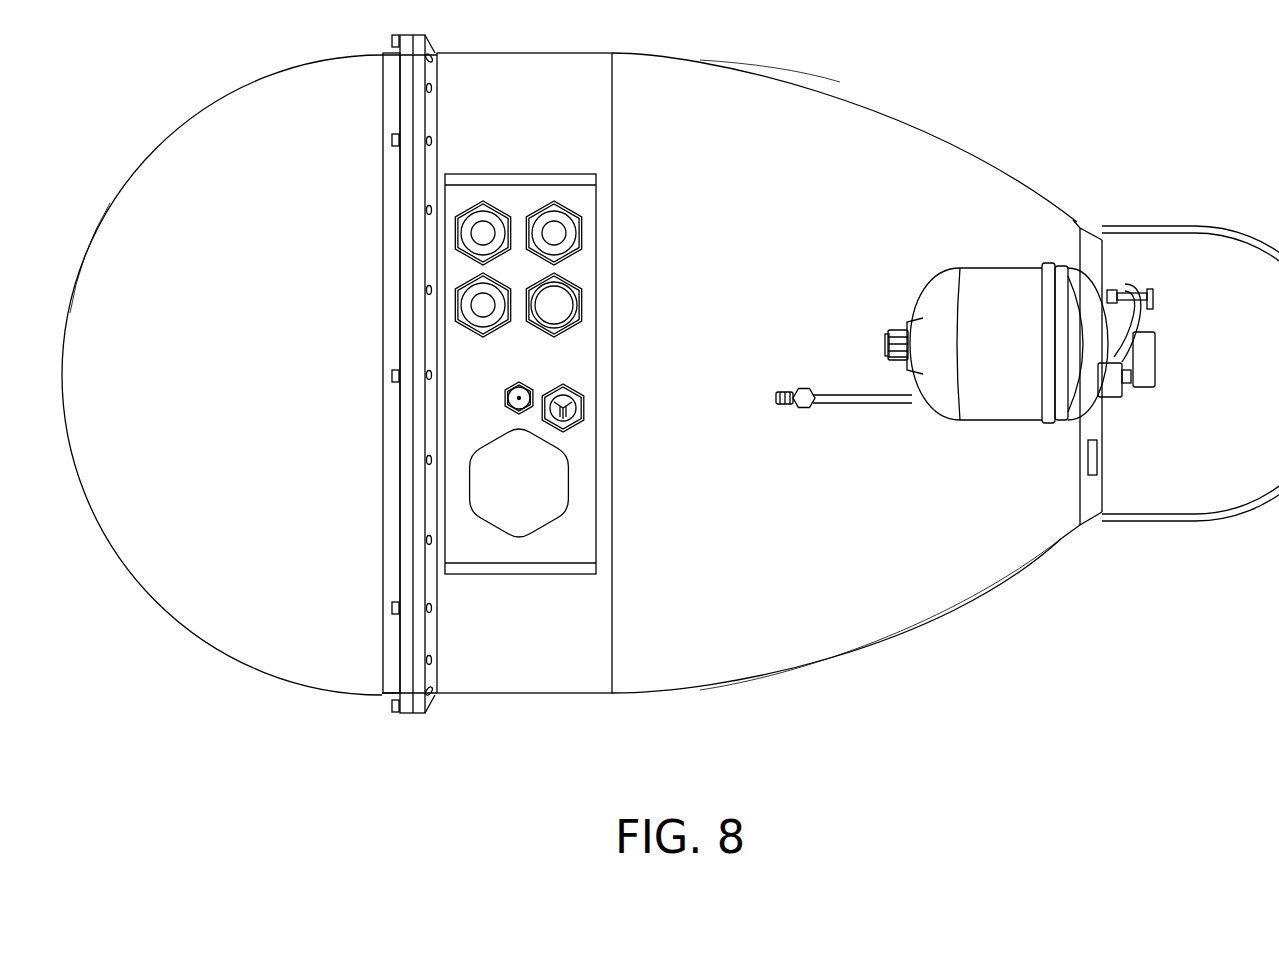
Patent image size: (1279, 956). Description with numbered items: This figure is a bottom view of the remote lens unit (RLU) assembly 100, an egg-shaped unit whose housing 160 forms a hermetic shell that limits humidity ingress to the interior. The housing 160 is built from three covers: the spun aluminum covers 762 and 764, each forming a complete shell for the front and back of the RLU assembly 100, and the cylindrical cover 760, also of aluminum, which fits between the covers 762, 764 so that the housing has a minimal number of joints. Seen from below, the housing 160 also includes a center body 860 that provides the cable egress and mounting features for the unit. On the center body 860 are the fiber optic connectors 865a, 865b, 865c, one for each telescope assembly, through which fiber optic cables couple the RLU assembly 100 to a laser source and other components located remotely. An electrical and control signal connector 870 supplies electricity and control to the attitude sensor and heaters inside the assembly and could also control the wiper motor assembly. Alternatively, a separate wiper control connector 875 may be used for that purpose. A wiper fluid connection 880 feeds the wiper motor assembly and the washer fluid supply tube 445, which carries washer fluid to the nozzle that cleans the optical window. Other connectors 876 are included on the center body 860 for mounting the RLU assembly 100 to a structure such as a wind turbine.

The remote lens unit assembly 100 is at (1085, 57).
The housing 160 is at (912, 612).
The cover 764 is at (252, 201).
The cover 762 is at (808, 201).
The cylindrical cover 760 is at (538, 646).
The center body 860 is at (517, 200).
The fiber optic connector 865a is at (578, 213).
The fiber optic connector 865b is at (455, 233).
The fiber optic connector 865c is at (460, 323).
The electrical and control signal connector 870 is at (583, 312).
The connector 876 is at (478, 432).
The wiper control connector 875 is at (888, 345).
The wiper fluid connection 880 is at (776, 398).
The washer fluid supply tube 445 is at (848, 407).